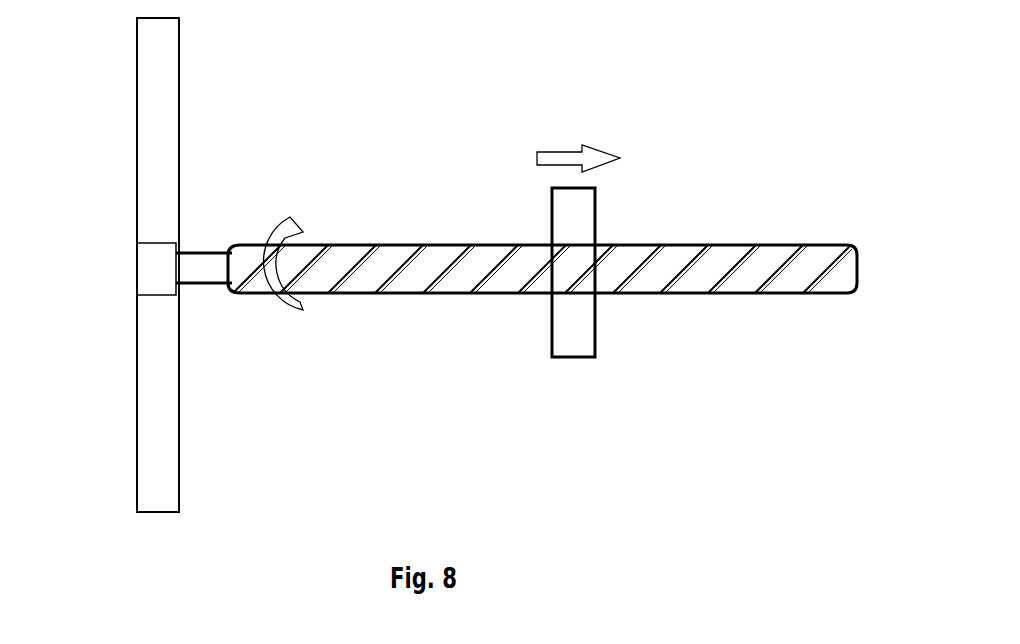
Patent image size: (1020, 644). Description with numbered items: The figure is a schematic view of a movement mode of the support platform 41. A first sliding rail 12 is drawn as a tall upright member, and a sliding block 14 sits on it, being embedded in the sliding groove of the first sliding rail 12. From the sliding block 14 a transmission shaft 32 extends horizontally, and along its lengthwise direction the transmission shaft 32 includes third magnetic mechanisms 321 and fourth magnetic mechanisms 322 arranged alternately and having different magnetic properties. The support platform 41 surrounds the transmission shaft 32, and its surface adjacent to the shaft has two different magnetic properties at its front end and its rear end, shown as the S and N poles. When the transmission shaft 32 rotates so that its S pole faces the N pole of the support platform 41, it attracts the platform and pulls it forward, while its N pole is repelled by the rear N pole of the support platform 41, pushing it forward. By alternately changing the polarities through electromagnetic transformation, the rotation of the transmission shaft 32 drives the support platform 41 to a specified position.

The first sliding rail 12 is at (163, 124).
The sliding block 14 is at (134, 265).
The transmission shaft 32 is at (534, 281).
The third magnetic mechanism 321 is at (683, 242).
The fourth magnetic mechanism 322 is at (746, 240).
The support platform 41 is at (566, 339).